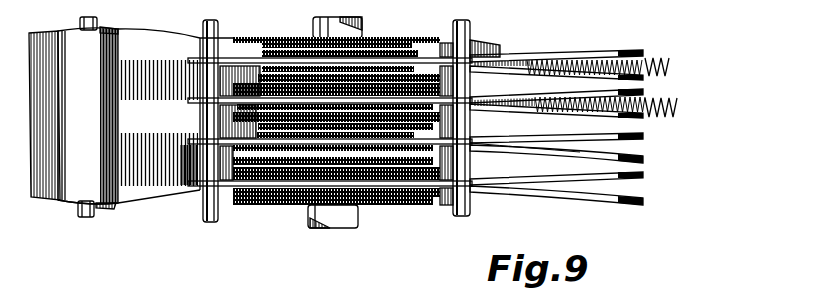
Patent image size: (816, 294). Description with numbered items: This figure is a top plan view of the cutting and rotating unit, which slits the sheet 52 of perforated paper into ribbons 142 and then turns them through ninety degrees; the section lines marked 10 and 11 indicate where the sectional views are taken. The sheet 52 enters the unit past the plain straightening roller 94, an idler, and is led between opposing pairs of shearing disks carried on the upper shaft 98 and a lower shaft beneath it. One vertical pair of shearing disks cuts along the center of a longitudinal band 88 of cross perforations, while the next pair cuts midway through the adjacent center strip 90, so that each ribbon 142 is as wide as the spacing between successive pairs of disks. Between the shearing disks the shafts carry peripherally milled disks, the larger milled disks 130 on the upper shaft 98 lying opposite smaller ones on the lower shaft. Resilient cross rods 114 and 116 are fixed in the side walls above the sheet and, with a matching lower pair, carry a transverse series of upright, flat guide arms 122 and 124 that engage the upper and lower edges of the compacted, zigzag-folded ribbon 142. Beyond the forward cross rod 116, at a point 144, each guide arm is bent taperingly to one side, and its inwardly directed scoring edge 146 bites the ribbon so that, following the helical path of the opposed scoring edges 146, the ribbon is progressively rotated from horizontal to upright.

The section line 10- 10 is at (80, 183).
The section line 11- 11 is at (438, 10).
The sheet 52 is at (172, 193).
The longitudinal band of cross perforations 88 is at (142, 172).
The center strip 90 is at (160, 127).
The straightening roller 94 is at (72, 199).
The upper shaft 98 is at (358, 218).
The cross rod 114 is at (213, 220).
The cross rod 116 is at (470, 210).
The upper guide arm 122 is at (540, 152).
The lower guide arm 124 is at (628, 160).
The larger milled disk 130 is at (438, 212).
The ribbon 142 is at (594, 58).
The bending point of guide arm 144 is at (487, 193).
The scoring edge 146 is at (615, 143).